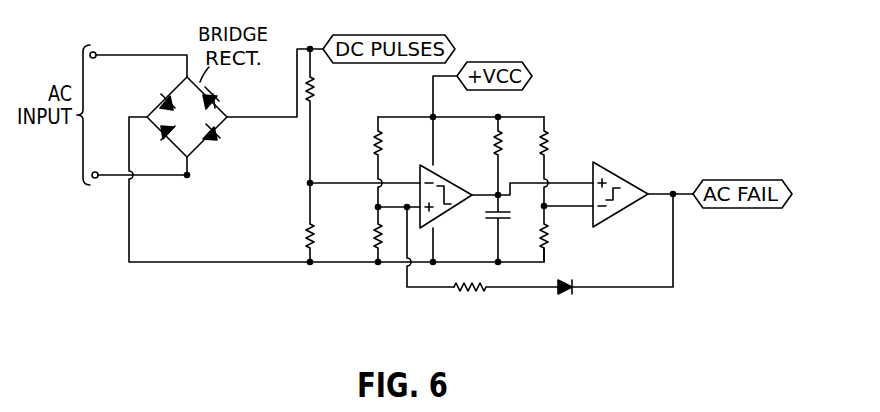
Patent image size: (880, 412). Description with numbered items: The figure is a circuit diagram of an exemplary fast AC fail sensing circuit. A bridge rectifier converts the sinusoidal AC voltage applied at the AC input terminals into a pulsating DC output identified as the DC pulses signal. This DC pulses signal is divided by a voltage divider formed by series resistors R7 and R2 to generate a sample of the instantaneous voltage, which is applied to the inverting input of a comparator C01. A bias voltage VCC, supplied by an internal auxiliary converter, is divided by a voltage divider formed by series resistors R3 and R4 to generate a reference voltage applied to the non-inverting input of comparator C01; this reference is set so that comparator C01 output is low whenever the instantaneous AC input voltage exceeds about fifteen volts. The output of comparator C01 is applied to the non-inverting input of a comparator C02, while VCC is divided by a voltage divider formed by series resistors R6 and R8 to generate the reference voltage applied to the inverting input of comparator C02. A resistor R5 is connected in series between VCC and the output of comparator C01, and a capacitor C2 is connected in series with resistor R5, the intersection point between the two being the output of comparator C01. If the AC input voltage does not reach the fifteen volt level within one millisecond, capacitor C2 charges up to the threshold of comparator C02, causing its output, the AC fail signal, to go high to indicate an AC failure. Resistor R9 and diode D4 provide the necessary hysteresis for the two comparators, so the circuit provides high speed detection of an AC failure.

The resistor R2 is at (294, 222).
The resistor R3 is at (363, 162).
The resistor R4 is at (363, 234).
The resistor R5 is at (511, 156).
The resistor R6 is at (560, 161).
The resistor R7 is at (325, 116).
The resistor R8 is at (558, 234).
The resistor R9 is at (506, 299).
The capacitor C2 is at (492, 224).
The comparator C01 is at (447, 180).
The comparator C02 is at (610, 172).
The diode D4 is at (575, 283).